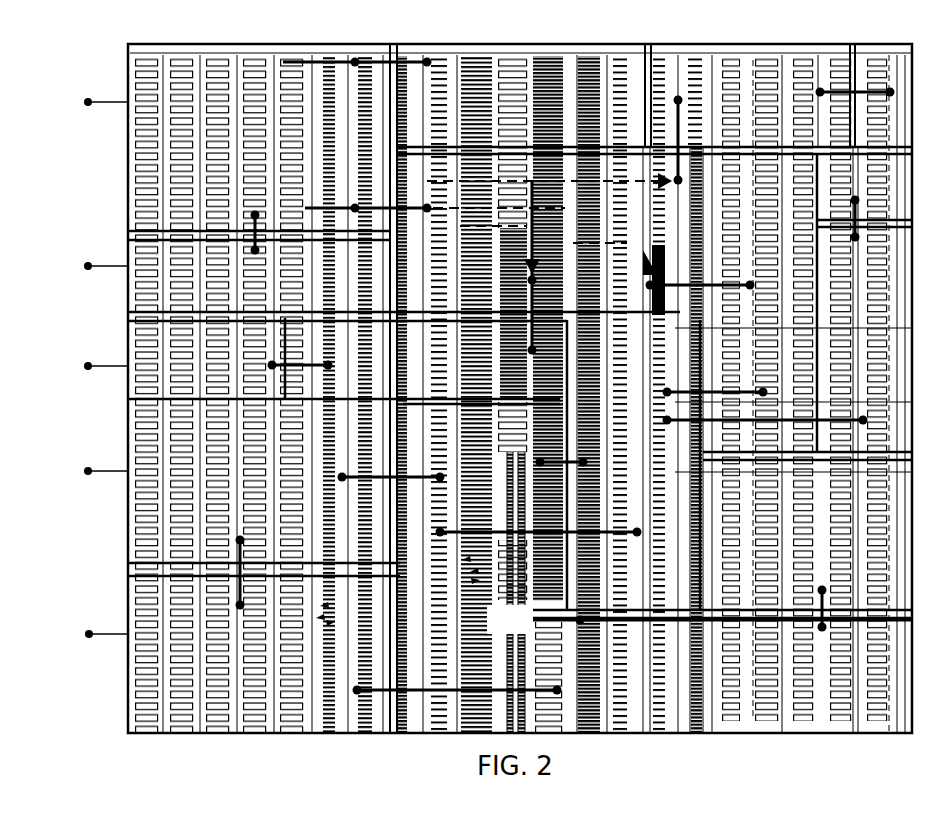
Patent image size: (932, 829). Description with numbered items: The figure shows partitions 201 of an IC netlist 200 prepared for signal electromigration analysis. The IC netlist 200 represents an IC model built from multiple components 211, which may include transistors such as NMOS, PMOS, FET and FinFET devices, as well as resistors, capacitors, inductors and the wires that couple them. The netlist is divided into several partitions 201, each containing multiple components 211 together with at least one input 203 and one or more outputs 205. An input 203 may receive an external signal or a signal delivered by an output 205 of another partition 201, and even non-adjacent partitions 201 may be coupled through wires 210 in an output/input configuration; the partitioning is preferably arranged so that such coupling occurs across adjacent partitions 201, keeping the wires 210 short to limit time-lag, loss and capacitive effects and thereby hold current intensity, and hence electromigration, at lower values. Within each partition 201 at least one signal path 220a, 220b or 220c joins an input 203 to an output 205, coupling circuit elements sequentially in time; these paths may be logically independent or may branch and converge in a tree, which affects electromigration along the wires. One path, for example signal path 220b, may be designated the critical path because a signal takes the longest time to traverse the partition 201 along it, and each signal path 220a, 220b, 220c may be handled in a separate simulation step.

The IC netlist 200 is at (103, 33).
The partition 201 is at (277, 140).
The input 203 is at (88, 100).
The output 205 is at (355, 66).
The wire 210 is at (413, 61).
The component 211 is at (312, 632).
The signal path 220a is at (625, 181).
The signal path (critical path) 220b is at (627, 243).
The signal path 220c is at (487, 227).